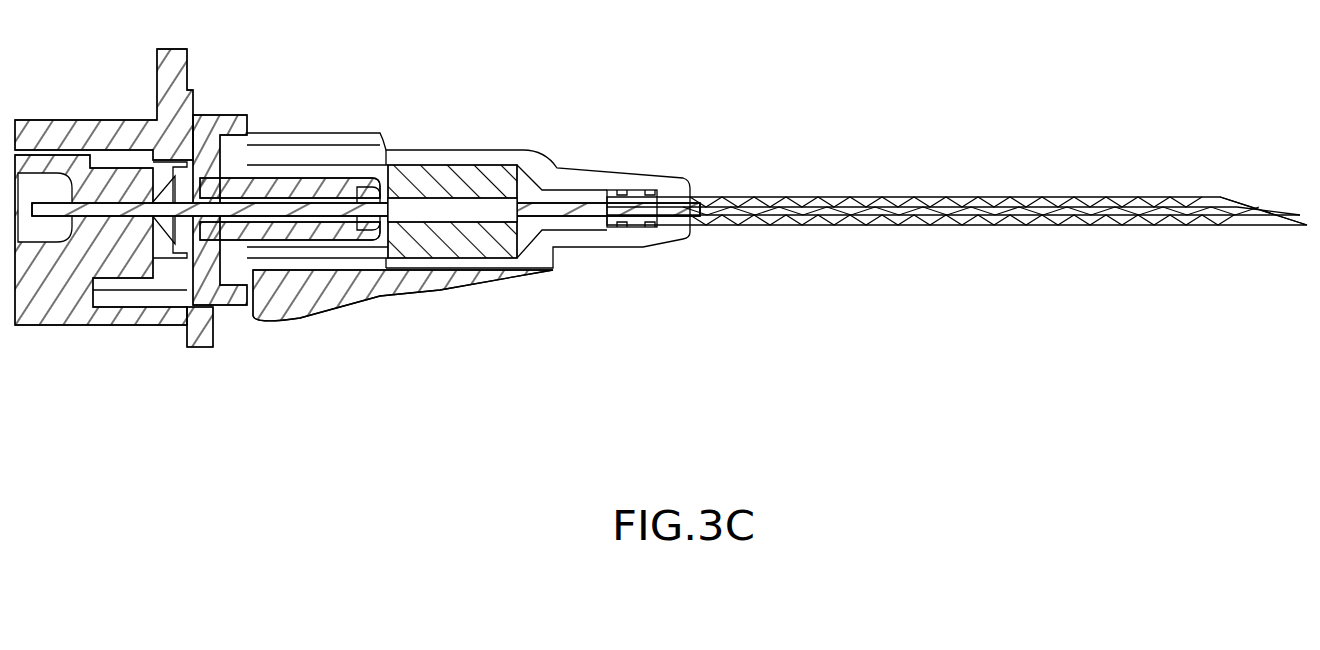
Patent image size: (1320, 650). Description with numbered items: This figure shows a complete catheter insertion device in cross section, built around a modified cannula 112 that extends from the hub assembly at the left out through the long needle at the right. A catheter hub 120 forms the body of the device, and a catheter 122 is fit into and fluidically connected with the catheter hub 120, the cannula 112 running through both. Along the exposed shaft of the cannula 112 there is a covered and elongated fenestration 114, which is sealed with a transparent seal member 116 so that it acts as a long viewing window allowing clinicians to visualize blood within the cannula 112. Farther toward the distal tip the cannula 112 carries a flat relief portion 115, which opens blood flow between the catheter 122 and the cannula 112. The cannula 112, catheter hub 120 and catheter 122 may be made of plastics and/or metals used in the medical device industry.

The cannula 112 is at (522, 232).
The fenestration 114 is at (877, 217).
The flat relief portion 115 is at (1015, 197).
The transparent seal member 116 is at (758, 196).
The catheter hub 120 is at (548, 253).
The catheter 122 is at (803, 226).